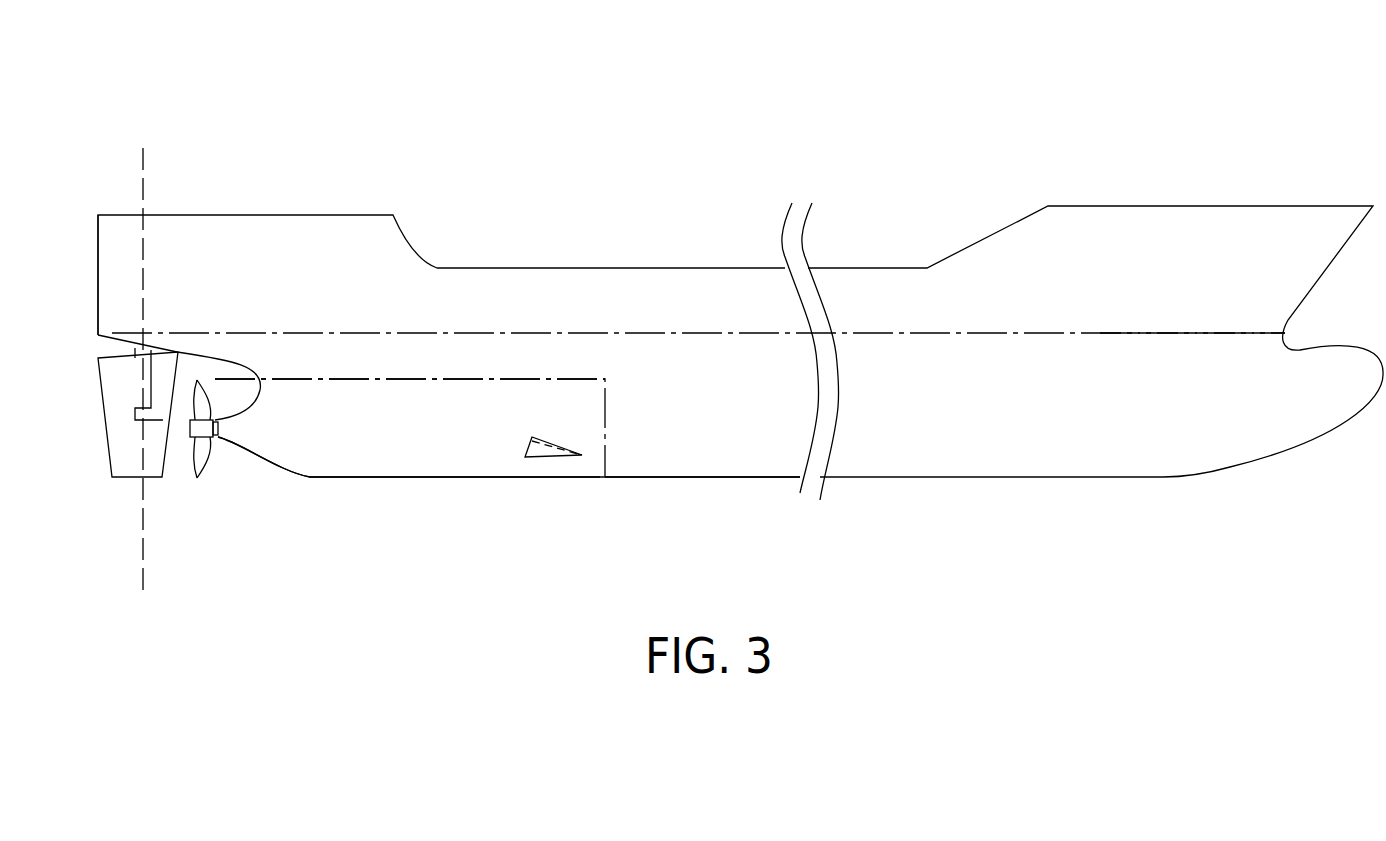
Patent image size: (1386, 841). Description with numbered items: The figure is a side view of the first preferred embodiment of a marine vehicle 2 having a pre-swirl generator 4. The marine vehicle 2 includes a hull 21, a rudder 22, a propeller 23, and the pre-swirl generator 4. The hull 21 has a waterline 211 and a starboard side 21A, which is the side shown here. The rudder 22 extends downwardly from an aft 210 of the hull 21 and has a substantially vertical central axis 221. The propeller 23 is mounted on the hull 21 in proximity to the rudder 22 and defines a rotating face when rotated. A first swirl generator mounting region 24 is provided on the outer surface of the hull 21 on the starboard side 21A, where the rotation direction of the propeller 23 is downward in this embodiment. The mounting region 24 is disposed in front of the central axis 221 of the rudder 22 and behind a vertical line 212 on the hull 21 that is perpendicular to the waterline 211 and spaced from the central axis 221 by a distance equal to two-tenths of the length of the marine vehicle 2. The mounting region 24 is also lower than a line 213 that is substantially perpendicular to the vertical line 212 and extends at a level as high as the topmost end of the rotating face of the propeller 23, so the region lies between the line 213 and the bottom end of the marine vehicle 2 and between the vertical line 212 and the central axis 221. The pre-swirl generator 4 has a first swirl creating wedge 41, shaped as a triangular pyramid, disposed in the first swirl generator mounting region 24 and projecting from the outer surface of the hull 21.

The marine vehicle 2 is at (688, 162).
The hull 21 is at (386, 212).
The aft 210 is at (110, 251).
The central axis 221 is at (143, 297).
The waterline 211 is at (1124, 333).
The vertical line 212 is at (607, 452).
The line 213 is at (362, 380).
The first swirl generator mounting region 24 is at (417, 462).
The starboard side 21A is at (722, 465).
The rudder 22 is at (137, 478).
The propeller 23 is at (205, 478).
The pre-swirl generator 4 is at (522, 455).
The first swirl creating wedge 41 is at (540, 457).